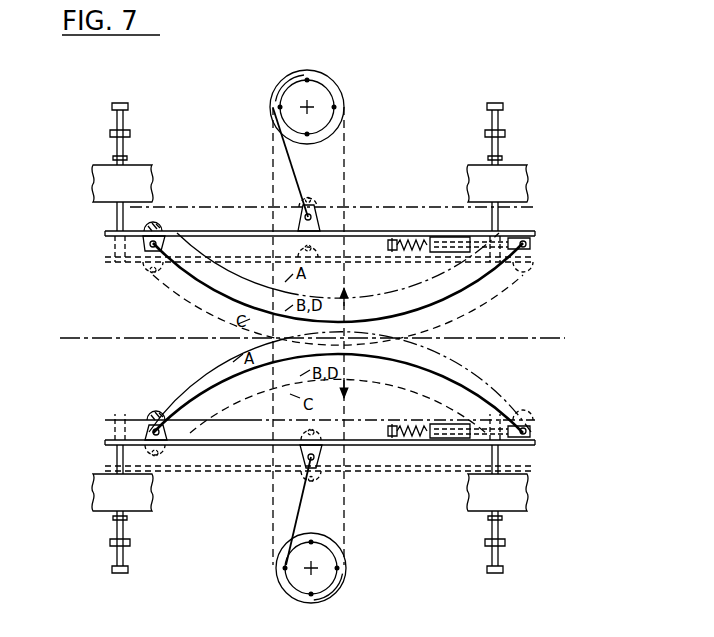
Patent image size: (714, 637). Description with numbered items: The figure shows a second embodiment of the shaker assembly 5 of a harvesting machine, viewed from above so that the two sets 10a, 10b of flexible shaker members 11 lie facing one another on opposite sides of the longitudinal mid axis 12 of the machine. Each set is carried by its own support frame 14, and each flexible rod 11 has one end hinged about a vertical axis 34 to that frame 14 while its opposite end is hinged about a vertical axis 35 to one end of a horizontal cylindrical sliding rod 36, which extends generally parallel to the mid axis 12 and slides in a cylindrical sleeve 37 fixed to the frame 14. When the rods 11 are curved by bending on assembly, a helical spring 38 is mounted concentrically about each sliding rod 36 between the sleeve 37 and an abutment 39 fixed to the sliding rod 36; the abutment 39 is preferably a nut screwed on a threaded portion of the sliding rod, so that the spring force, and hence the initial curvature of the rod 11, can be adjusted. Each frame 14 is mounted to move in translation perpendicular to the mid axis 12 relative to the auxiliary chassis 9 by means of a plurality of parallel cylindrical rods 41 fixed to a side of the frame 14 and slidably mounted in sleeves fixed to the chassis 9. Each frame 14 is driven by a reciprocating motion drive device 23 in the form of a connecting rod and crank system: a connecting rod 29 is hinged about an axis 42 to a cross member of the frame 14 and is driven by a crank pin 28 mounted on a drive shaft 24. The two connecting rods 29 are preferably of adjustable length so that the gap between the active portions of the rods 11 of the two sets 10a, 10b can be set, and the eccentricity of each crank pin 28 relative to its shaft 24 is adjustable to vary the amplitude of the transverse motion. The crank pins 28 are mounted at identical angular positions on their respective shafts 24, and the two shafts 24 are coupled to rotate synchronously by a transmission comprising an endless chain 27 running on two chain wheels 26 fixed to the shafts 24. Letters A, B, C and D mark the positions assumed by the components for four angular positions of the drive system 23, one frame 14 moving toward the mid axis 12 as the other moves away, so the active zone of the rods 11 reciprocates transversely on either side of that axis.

The shaker assembly 5 is at (72, 321).
The auxiliary chassis 9 is at (518, 183).
The first set of shaker members 10a is at (527, 292).
The second set of shaker members 10b is at (530, 382).
The shaker member 11 is at (455, 375).
The longitudinal mid axis 12 is at (567, 335).
The support frame 14 is at (372, 228).
The reciprocating motion drive device 23 is at (287, 334).
The drive shaft 24 is at (313, 104).
The chain wheel 26 is at (323, 76).
The endless chain 27 is at (272, 179).
The crank pin 28 is at (274, 121).
The connecting rod 29 is at (298, 182).
The vertical hinge axis 34 is at (145, 253).
The vertical hinge axis 35 is at (534, 245).
The sliding rod 36 is at (517, 271).
The cylindrical sleeve 37 is at (448, 236).
The helical spring 38 is at (418, 254).
The abutment 39 is at (392, 254).
The cylindrical rod 41 is at (117, 147).
The hinge axis 42 is at (309, 219).